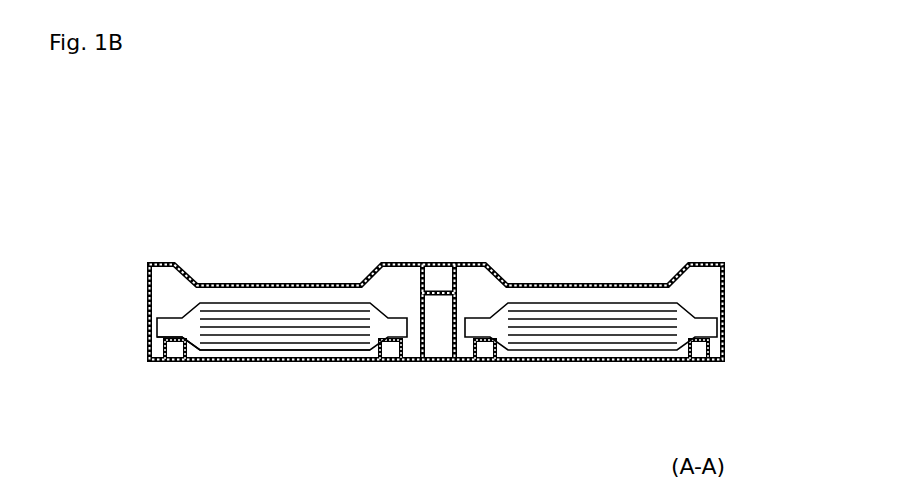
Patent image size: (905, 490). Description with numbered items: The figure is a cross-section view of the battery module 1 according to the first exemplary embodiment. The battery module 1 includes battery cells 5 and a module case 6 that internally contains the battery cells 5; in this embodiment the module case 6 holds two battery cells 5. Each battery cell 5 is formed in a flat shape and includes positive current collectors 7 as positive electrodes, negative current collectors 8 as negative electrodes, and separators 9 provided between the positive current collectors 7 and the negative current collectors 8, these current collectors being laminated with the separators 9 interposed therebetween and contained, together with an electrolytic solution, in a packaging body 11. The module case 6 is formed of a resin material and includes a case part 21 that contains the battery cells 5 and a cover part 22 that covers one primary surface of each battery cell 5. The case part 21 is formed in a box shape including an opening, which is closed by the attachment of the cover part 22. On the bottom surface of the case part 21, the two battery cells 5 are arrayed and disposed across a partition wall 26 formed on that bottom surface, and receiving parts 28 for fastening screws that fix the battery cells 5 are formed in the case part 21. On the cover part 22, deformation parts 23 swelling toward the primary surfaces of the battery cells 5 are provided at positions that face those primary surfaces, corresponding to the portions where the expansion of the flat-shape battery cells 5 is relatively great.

The battery module 1 is at (486, 291).
The battery cell 5 is at (299, 338).
The module case 6 is at (486, 270).
The positive current collector 7 is at (258, 346).
The negative current collector 8 is at (221, 338).
The separator 9 is at (236, 340).
The packaging body 11 is at (245, 306).
The case part 21 is at (457, 331).
The cover part 22 is at (457, 239).
The deformation part 23 is at (328, 284).
The partition wall 26 is at (440, 352).
The receiving part 28 is at (503, 362).